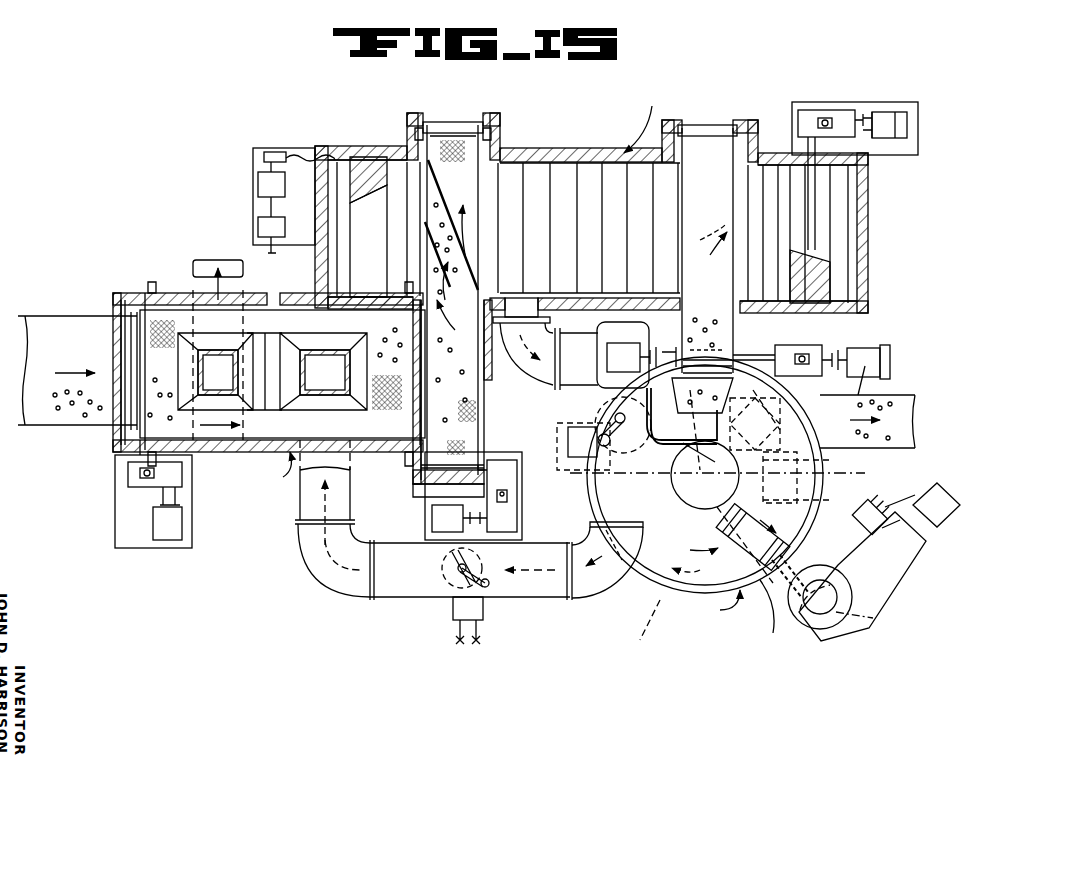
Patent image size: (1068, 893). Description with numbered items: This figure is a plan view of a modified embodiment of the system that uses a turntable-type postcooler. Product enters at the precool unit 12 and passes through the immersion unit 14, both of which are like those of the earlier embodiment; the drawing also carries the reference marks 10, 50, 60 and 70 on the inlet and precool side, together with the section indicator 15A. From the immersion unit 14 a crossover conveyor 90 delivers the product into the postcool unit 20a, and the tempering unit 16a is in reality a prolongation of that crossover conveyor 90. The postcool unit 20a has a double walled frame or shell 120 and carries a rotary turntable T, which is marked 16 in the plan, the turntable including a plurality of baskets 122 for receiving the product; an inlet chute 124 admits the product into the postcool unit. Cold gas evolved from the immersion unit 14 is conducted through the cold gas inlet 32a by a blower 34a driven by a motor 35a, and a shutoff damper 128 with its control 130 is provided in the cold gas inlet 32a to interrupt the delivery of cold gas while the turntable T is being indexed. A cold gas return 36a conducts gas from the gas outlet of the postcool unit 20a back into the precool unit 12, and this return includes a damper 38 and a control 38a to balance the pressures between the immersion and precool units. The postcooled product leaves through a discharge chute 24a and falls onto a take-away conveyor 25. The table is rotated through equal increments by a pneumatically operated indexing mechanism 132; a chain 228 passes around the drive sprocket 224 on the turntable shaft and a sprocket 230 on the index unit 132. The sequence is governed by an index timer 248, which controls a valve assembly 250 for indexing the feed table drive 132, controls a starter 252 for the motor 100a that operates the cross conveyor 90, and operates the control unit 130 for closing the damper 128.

The product inlet conveyor 10 is at (48, 400).
The precool unit 12 is at (108, 445).
The immersion unit 14 is at (558, 152).
The section line 15A is at (728, 270).
The rotary drum / transfer pipe 16 is at (685, 445).
The tempering unit 16a is at (738, 322).
The postcool unit 20a is at (665, 598).
The discharge chute 24a is at (822, 460).
The take-away conveyor 25 is at (915, 405).
The cold gas inlet 32a is at (618, 487).
The blower 34a is at (612, 410).
The motor 35a is at (625, 352).
The cold gas return 36a is at (503, 600).
The damper 38 is at (448, 568).
The control 38a is at (482, 620).
The precool unit 50 is at (172, 320).
The lower chute 60 is at (470, 332).
The conveyor slats 70 is at (523, 182).
The crossover conveyor 90 is at (705, 140).
The motor 100a is at (868, 366).
The double walled frame or shell 120 is at (765, 590).
The baskets 122 is at (793, 536).
The inlet chute 124 is at (795, 410).
The shutoff damper 128 is at (614, 419).
The control 130 is at (570, 440).
The indexing mechanism 132 is at (905, 572).
The drive sprocket 224 is at (616, 510).
The chain 228 is at (787, 590).
The sprocket 230 is at (845, 608).
The index timer 248 is at (883, 528).
The valve assembly 250 is at (918, 502).
The starter 252 is at (872, 366).
The rotary turntable T is at (795, 548).